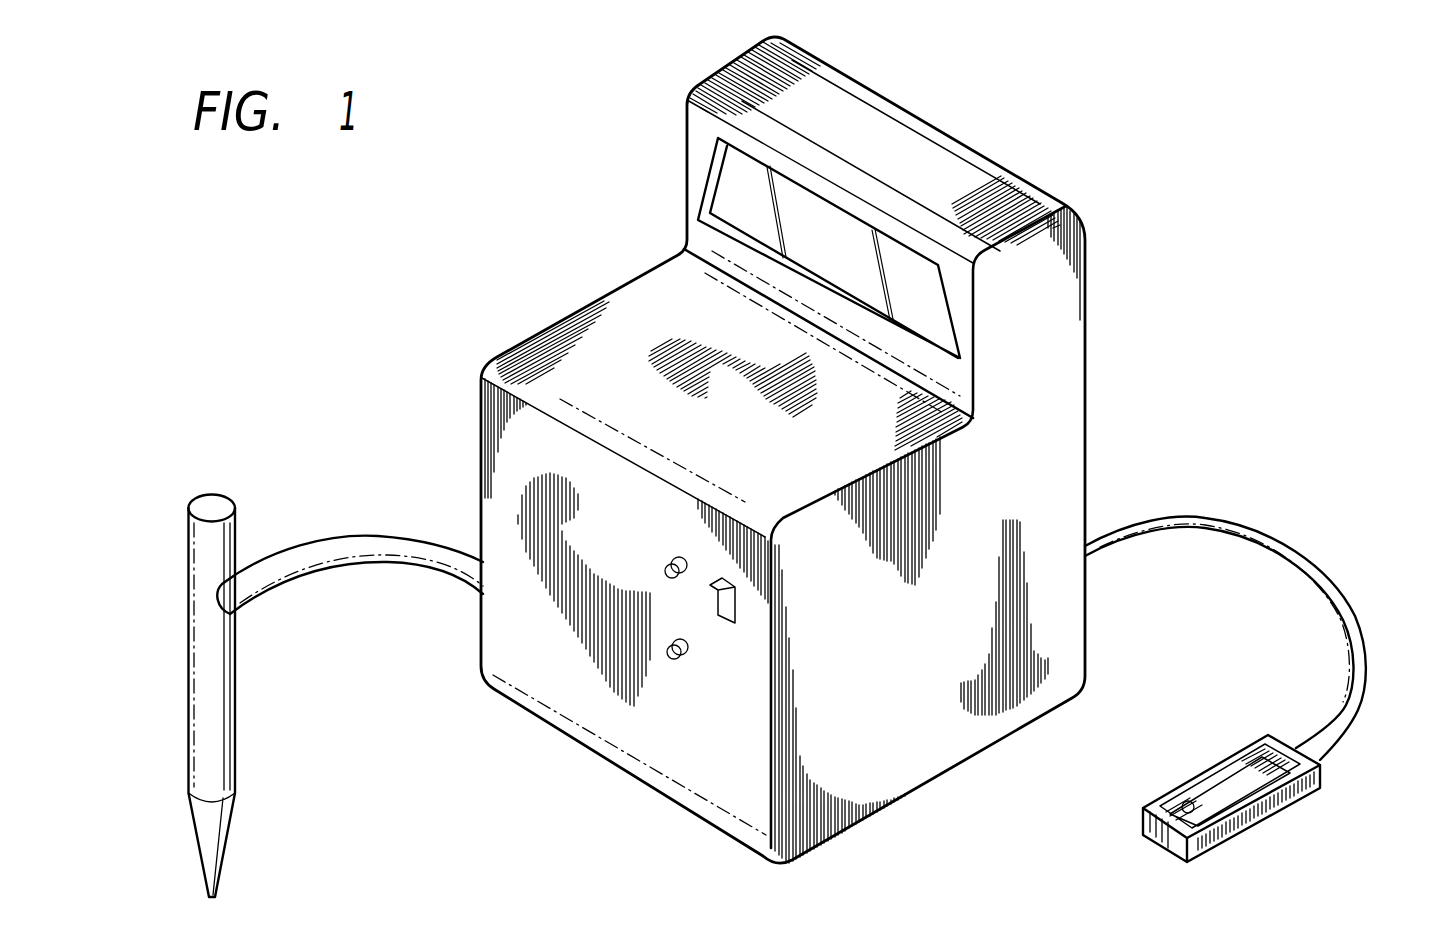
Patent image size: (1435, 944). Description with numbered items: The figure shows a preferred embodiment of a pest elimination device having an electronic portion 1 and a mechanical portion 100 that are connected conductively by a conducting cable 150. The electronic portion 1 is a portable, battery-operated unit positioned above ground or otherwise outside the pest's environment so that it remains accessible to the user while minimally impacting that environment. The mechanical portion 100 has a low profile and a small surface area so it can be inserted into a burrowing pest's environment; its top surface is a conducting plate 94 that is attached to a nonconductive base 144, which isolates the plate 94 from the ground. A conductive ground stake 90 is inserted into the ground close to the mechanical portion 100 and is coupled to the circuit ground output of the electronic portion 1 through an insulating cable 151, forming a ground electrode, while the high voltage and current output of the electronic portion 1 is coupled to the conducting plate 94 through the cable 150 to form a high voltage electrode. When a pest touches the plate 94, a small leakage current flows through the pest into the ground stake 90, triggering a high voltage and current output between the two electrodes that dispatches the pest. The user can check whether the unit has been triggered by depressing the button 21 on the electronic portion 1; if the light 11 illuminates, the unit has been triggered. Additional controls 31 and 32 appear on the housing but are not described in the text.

The electronic portion 1 is at (602, 352).
The light 11 is at (668, 568).
The button 21 is at (717, 776).
The switch 31 is at (718, 584).
The button 32 is at (677, 661).
The conductive ground stake 90 is at (208, 723).
The conducting plate 94 is at (1220, 788).
The mechanical portion 100 is at (1320, 760).
The nonconductive base 144 is at (1237, 828).
The conducting cable 150 is at (1275, 548).
The insulating cable 151 is at (348, 551).